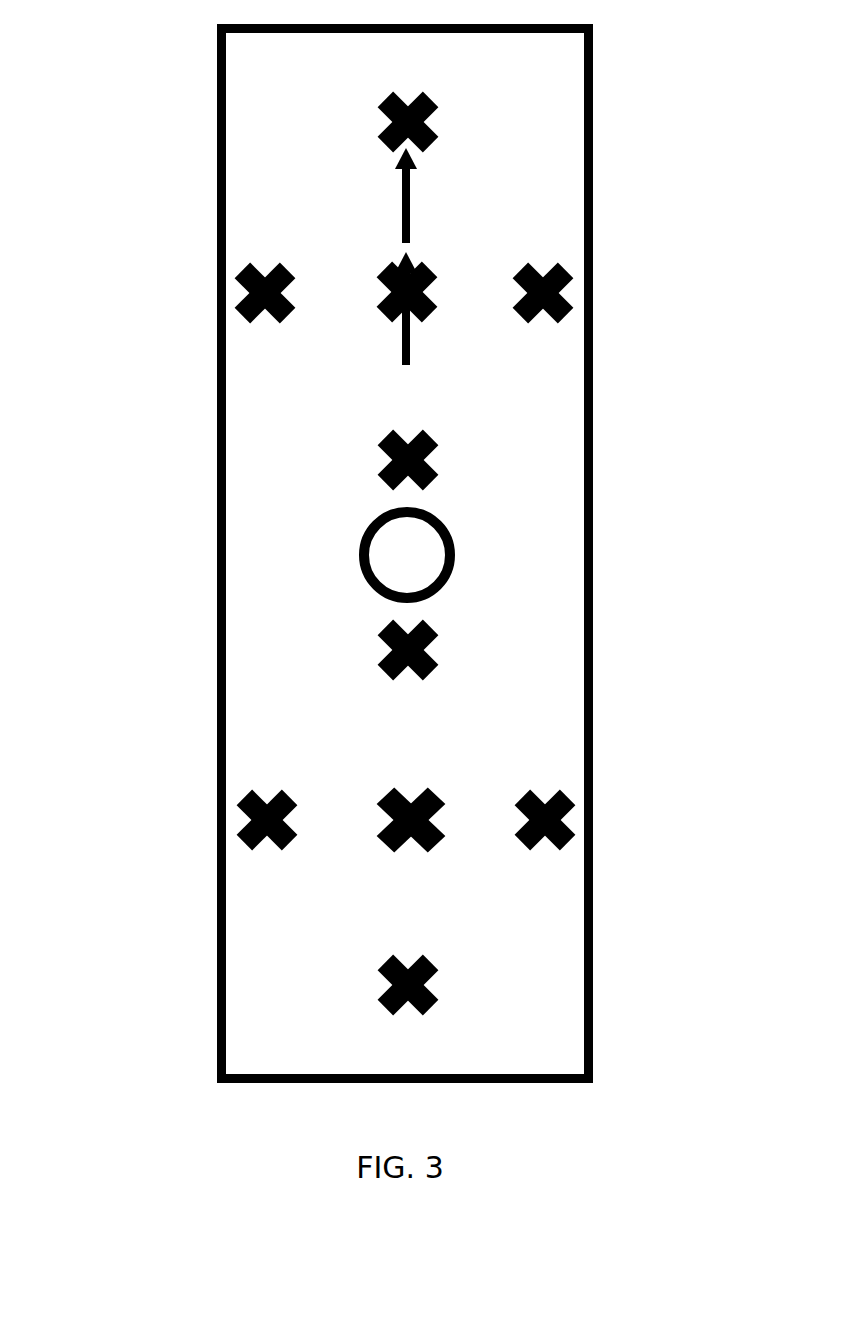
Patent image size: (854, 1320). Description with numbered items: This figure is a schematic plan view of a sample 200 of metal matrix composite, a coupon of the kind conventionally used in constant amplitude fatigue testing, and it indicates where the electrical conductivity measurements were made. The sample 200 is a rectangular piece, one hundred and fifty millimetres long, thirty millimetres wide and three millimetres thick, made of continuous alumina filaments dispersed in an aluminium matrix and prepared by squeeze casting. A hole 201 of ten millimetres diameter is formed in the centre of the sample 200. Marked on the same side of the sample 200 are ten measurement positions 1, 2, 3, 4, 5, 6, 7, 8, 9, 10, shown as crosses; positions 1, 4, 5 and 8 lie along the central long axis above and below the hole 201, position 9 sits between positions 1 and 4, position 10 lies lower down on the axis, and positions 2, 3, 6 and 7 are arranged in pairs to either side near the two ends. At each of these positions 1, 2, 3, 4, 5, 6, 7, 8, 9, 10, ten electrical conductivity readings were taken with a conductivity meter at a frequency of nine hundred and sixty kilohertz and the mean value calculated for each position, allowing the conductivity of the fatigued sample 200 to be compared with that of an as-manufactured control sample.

The sample 200 is at (263, 185).
The hole 201 is at (413, 555).
The measurement position 1 is at (408, 122).
The measurement position 2 is at (265, 293).
The measurement position 3 is at (543, 293).
The measurement position 4 is at (408, 460).
The measurement position 5 is at (408, 650).
The measurement position 6 is at (267, 820).
The measurement position 7 is at (545, 820).
The measurement position 8 is at (408, 985).
The measurement position 9 is at (407, 292).
The measurement position 10 is at (411, 819).